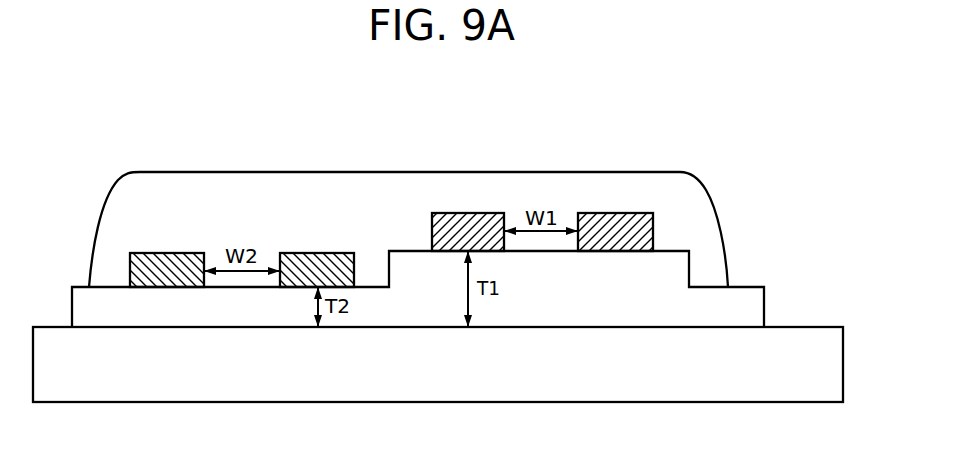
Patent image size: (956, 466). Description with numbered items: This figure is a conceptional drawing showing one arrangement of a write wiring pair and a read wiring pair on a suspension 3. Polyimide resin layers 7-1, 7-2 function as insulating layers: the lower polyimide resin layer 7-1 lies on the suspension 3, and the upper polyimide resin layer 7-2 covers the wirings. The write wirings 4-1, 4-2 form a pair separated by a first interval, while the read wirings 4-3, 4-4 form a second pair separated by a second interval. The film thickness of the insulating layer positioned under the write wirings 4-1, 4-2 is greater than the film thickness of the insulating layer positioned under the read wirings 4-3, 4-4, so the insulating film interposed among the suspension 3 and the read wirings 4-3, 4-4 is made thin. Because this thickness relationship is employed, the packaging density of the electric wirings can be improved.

The suspension 3 is at (799, 360).
The polyimide resin layer 7-1 is at (743, 313).
The polyimide resin layer 7-2 is at (343, 212).
The write wiring 4-1 is at (467, 213).
The write wiring 4-2 is at (615, 213).
The read wiring 4-3 is at (167, 252).
The read wiring 4-4 is at (315, 252).